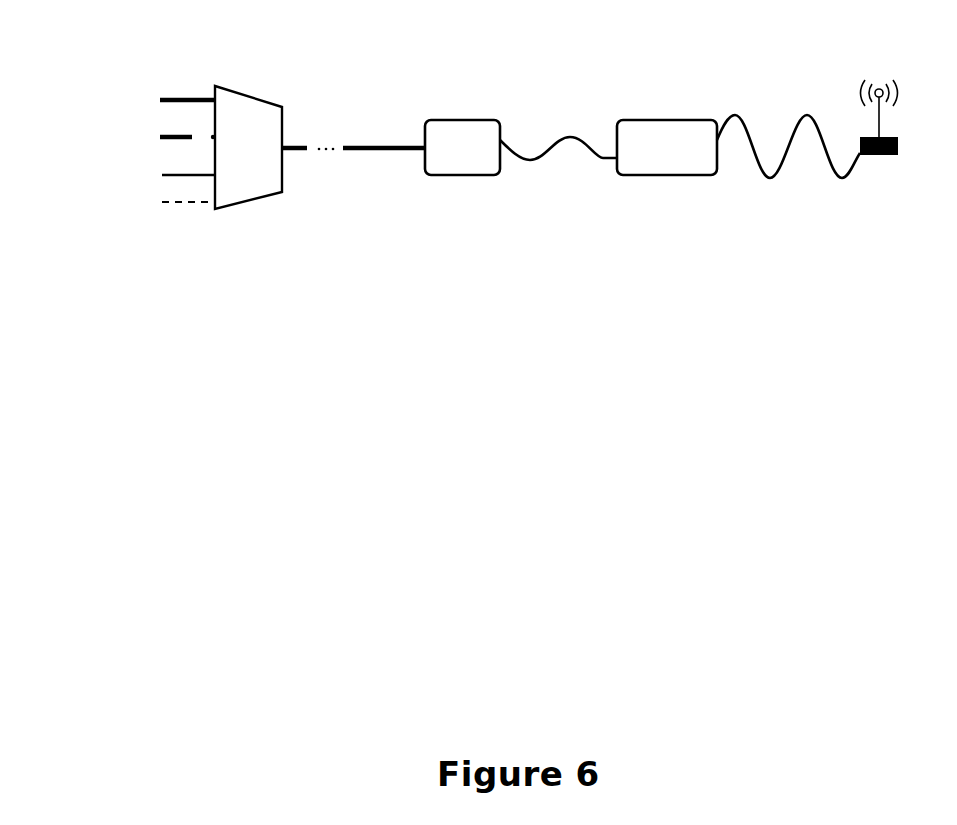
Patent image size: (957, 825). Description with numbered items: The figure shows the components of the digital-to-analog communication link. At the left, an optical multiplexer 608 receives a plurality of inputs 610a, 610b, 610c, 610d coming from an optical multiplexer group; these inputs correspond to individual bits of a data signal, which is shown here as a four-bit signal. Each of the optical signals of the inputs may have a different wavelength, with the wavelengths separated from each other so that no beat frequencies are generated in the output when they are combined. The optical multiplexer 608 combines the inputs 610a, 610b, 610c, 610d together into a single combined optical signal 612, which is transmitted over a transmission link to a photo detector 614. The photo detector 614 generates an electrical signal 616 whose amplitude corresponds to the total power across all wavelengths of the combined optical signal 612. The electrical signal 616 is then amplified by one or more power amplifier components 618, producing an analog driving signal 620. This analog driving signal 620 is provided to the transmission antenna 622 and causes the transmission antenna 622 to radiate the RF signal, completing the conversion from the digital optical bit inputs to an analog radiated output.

The optical multiplexer 608 is at (250, 205).
The input 610a is at (160, 100).
The input 610b is at (160, 135).
The input 610c is at (162, 175).
The input 610d is at (162, 202).
The combined optical signal 612 is at (360, 142).
The photo detector 614 is at (460, 120).
The electrical signal 616 is at (570, 137).
The power amplifier component 618 is at (672, 120).
The analog driving signal 620 is at (807, 113).
The transmission antenna 622 is at (879, 89).